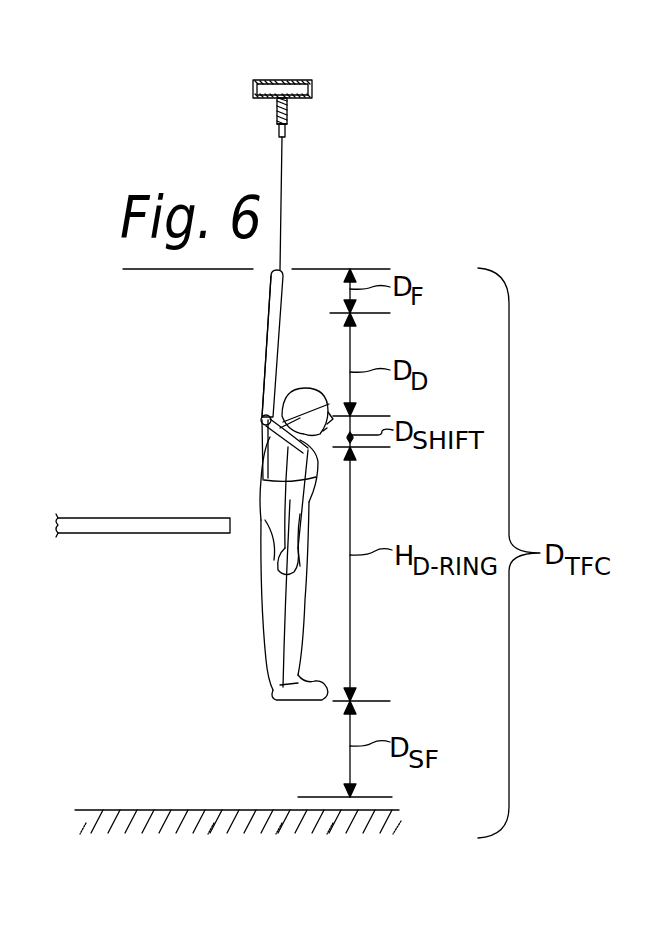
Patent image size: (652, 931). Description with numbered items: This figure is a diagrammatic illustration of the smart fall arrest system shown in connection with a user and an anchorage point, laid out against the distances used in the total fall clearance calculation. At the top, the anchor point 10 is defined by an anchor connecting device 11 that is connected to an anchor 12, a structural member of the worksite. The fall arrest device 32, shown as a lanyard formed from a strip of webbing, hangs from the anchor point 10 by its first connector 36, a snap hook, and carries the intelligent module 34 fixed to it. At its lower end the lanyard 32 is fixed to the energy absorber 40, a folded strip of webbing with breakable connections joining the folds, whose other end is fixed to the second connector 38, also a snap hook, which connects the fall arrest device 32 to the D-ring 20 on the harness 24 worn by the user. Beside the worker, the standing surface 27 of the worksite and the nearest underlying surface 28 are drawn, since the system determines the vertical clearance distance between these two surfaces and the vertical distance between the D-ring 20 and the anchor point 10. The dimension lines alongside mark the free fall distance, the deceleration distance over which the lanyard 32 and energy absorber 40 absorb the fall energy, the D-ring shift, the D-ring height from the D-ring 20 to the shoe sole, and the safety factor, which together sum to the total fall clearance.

The anchor point 10 is at (288, 103).
The anchor connecting device 11 is at (280, 98).
The anchor 12 is at (263, 81).
The D-ring 20 is at (262, 420).
The harness 24 is at (259, 446).
The standing surface 27 is at (127, 518).
The nearest underlying surface 28 is at (187, 810).
The fall arrest device 32 is at (283, 203).
The intelligent module 34 is at (279, 129).
The first connector 36 is at (288, 107).
The second connector 38 is at (262, 408).
The energy absorber 40 is at (265, 343).